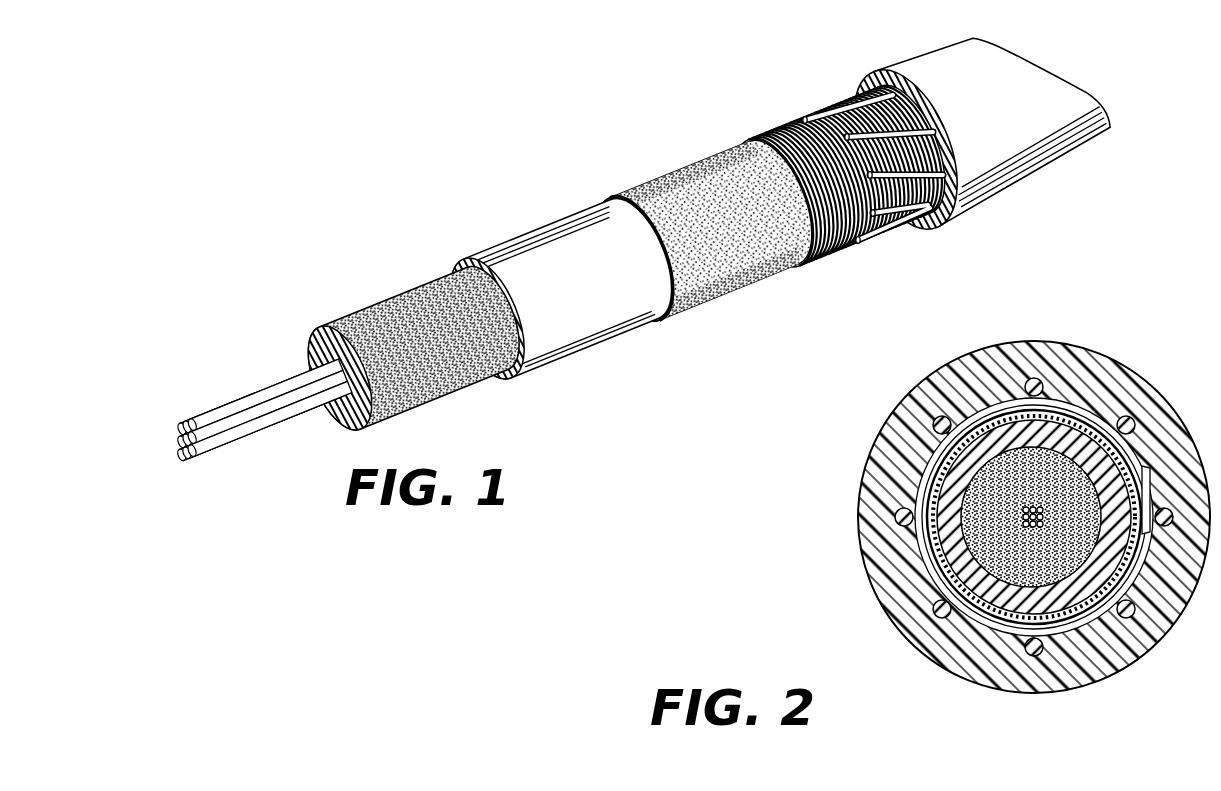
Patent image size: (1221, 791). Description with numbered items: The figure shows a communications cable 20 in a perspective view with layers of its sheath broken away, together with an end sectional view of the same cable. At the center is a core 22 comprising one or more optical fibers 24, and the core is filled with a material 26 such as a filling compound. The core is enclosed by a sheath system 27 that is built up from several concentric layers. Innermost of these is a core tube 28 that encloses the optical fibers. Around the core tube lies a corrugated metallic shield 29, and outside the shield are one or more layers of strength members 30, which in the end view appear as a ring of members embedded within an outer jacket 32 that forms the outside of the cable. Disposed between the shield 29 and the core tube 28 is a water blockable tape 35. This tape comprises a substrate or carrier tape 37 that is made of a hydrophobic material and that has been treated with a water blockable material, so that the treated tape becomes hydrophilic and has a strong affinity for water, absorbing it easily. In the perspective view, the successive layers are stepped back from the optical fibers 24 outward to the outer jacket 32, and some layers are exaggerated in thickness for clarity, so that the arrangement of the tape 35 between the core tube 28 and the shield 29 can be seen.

In FIG. 1, the communications cable 20 is at (644, 239).
In FIG. 2, the communications cable 20 is at (1010, 500).
In FIG. 1, the core 22 is at (259, 418).
In FIG. 2, the core 22 is at (1034, 507).
In FIG. 1, the optical fibers 24 is at (224, 401).
In FIG. 1, the filling material 26 is at (348, 323).
In FIG. 2, the filling material 26 is at (1031, 517).
In FIG. 1, the sheath system 27 is at (777, 283).
In FIG. 1, the core tube 28 is at (553, 347).
In FIG. 1, the corrugated metallic shield 29 is at (790, 270).
In FIG. 2, the corrugated metallic shield 29 is at (992, 409).
In FIG. 1, the strength members 30 is at (831, 116).
In FIG. 2, the strength members 30 is at (1037, 386).
In FIG. 1, the outer jacket 32 is at (852, 87).
In FIG. 2, the outer jacket 32 is at (1122, 375).
In FIG. 1, the water blockable tape 35 is at (633, 204).
In FIG. 2, the water blockable tape 35 is at (921, 488).
In FIG. 1, the carrier tape 37 is at (643, 237).